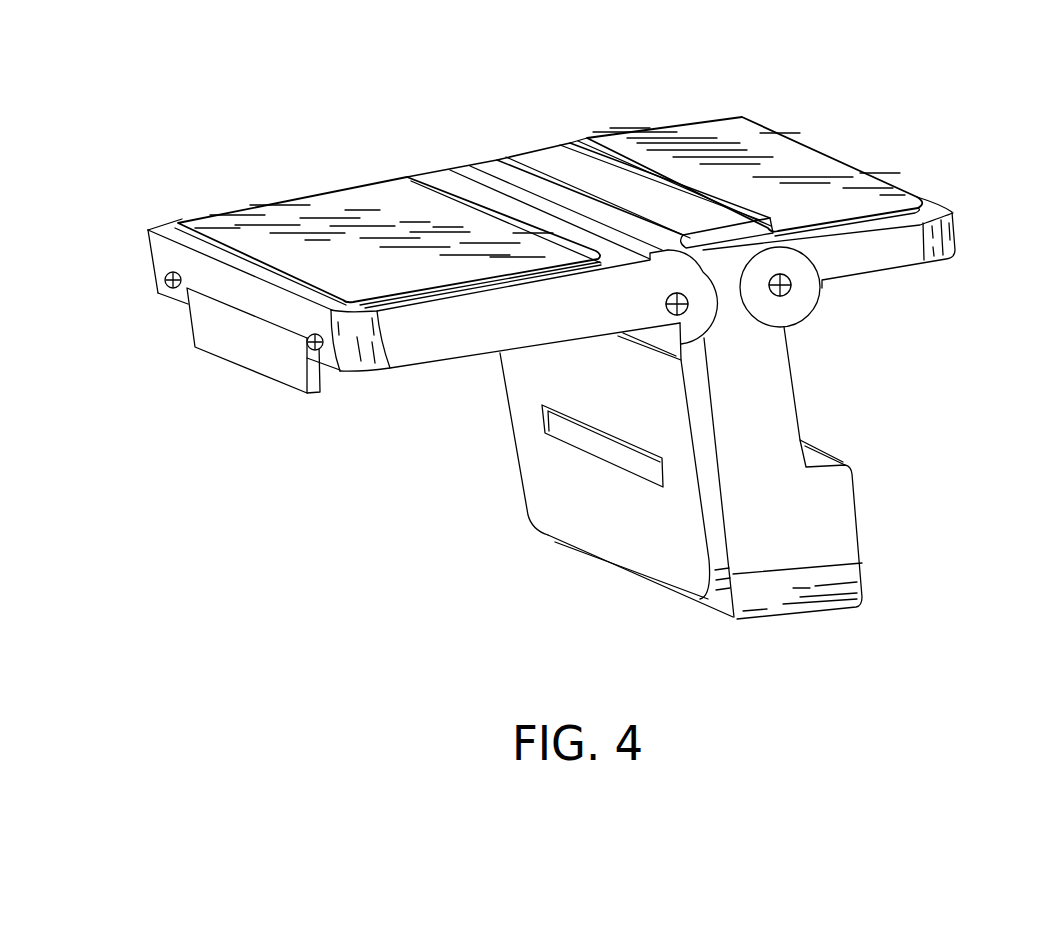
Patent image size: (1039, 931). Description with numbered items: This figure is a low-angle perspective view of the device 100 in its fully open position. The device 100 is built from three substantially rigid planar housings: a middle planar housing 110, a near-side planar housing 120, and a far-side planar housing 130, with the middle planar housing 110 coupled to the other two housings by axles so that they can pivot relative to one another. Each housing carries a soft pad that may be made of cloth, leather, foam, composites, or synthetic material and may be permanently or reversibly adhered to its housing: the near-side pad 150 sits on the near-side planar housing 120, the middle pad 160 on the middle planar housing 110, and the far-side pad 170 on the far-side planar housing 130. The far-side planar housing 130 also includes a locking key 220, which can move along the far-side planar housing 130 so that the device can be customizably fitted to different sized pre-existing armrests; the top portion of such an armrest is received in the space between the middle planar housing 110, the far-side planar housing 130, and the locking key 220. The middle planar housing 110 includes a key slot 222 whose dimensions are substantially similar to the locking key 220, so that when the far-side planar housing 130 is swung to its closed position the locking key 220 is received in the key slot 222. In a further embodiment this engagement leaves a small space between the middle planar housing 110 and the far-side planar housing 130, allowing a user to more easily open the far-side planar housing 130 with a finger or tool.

The device 100 is at (227, 578).
The middle planar housing 110 is at (727, 471).
The near-side planar housing 120 is at (865, 253).
The far-side planar housing 130 is at (468, 338).
The near-side pad 150 is at (708, 150).
The middle pad 160 is at (563, 165).
The far-side pad 170 is at (332, 215).
The locking key 220 is at (242, 347).
The key slot 222 is at (617, 453).